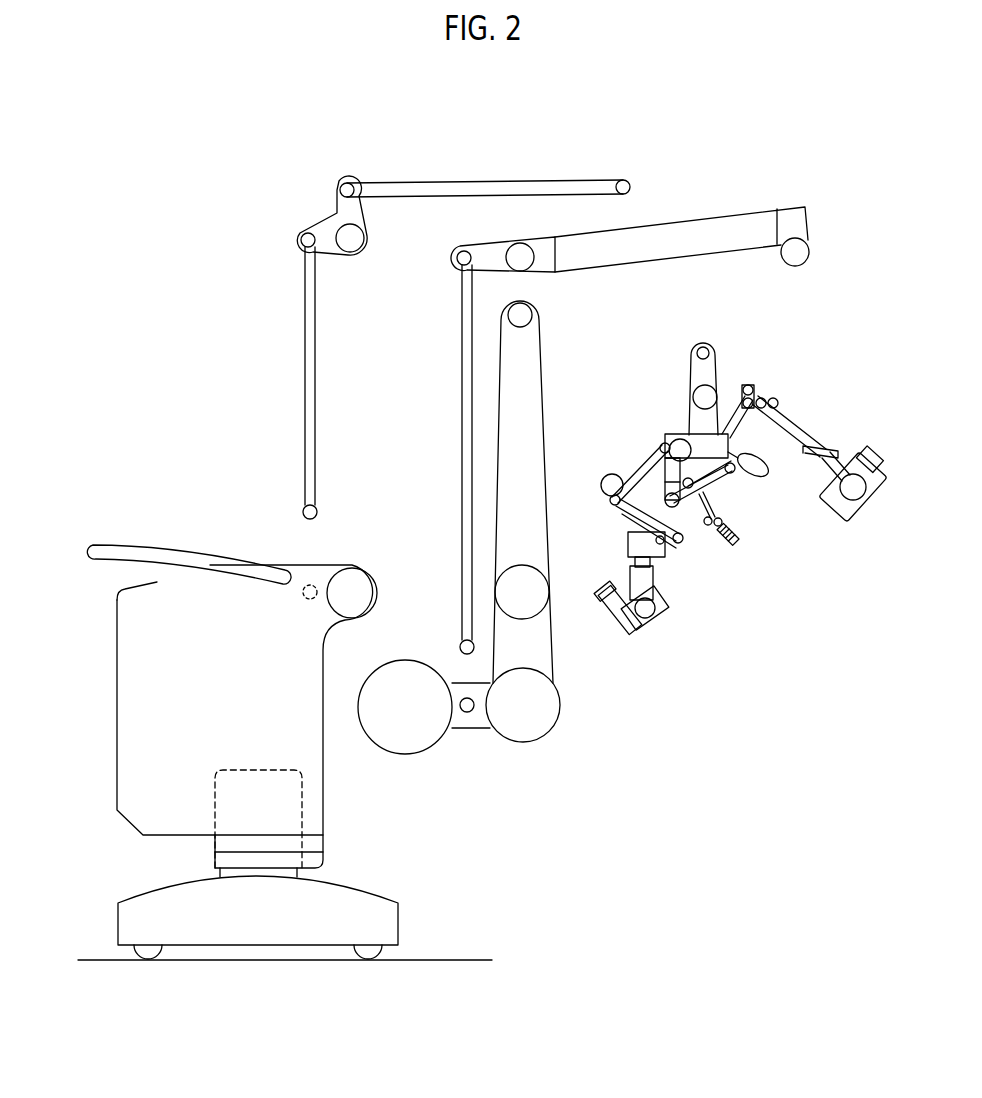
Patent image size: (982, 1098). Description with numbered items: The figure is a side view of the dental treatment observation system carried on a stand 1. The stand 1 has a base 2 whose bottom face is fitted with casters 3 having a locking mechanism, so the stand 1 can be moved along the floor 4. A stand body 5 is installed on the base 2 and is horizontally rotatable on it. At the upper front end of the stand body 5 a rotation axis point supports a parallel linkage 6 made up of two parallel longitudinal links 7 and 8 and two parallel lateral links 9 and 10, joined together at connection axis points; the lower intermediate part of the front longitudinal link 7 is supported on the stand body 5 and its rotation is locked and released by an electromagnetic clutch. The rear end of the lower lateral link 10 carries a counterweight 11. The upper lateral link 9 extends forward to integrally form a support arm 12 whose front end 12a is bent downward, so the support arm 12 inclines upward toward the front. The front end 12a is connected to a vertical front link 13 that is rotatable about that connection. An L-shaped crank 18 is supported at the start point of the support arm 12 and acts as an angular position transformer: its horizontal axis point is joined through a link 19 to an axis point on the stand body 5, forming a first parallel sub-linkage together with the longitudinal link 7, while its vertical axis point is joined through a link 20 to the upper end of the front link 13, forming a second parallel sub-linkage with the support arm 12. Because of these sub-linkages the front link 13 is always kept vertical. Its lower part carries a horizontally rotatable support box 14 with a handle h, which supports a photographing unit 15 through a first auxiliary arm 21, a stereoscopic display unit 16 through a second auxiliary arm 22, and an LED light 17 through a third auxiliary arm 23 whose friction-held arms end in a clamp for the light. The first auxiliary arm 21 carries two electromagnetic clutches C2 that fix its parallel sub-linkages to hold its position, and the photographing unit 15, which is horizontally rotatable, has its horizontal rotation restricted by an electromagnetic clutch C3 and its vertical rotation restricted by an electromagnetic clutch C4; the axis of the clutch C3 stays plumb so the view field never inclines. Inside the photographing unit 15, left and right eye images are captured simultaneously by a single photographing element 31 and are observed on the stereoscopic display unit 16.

The stand 1 is at (598, 332).
The base 2 is at (368, 890).
The casters 3 is at (150, 962).
The floor 4 is at (458, 963).
The stand body 5 is at (117, 715).
The parallel linkage 6 is at (428, 441).
The longitudinal link 7 is at (541, 372).
The longitudinal link 8 is at (461, 355).
The upper lateral link 9 is at (490, 276).
The lower lateral link 10 is at (482, 730).
The counterweight 11 is at (405, 756).
The support arm 12 is at (680, 222).
The front end 12a is at (813, 250).
The front link 13 is at (716, 365).
The support box 14 is at (690, 432).
The photographing unit 15 is at (668, 615).
The stereoscopic display unit 16 is at (880, 505).
The LED light 17 is at (737, 538).
The L-shaped crank 18 is at (337, 212).
The link 19 is at (305, 372).
The link 20 is at (488, 184).
The first auxiliary arm 21 is at (642, 462).
The second auxiliary arm 22 is at (798, 407).
The third auxiliary arm 23 is at (735, 480).
The photographing element 31 is at (606, 606).
The electromagnetic clutch C2 is at (670, 440).
The electromagnetic clutch C3 is at (628, 538).
The electromagnetic clutch C4 is at (646, 626).
The handle h is at (768, 472).